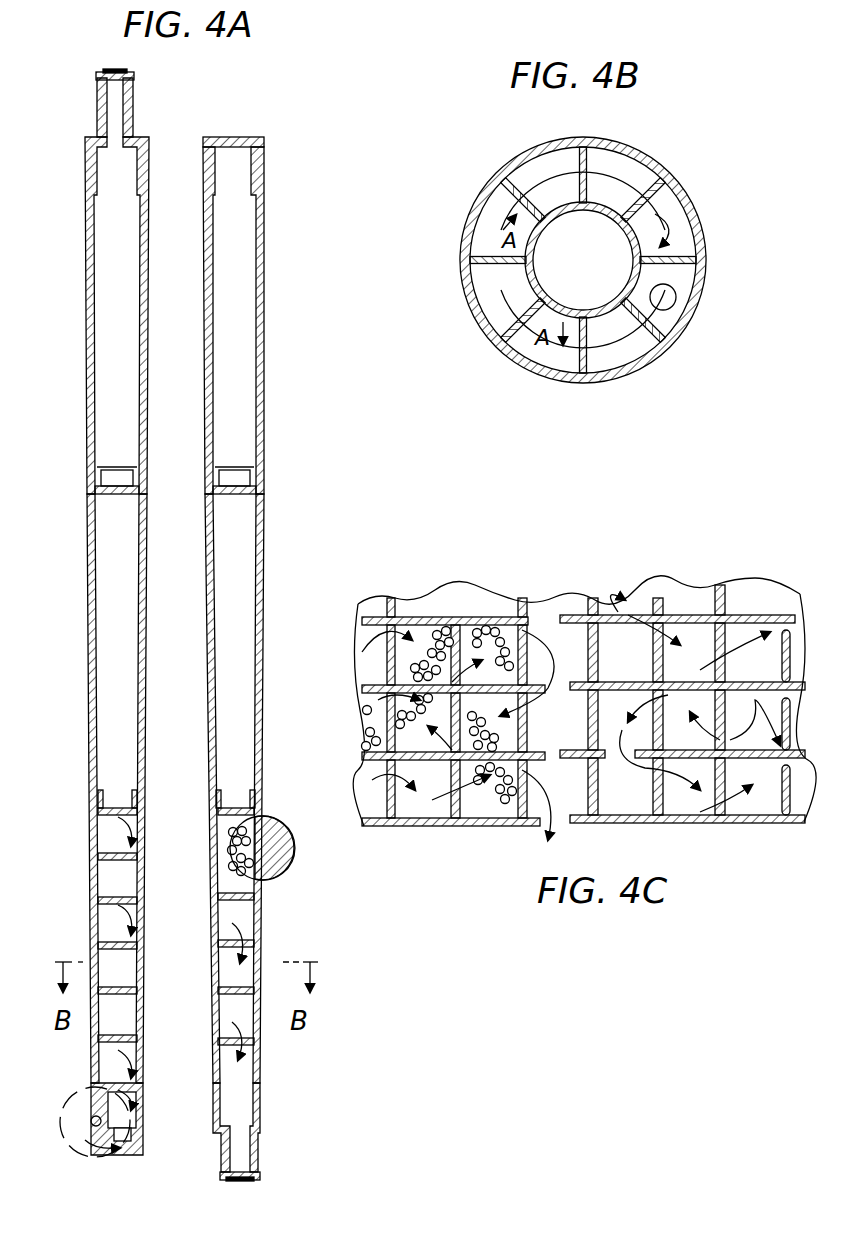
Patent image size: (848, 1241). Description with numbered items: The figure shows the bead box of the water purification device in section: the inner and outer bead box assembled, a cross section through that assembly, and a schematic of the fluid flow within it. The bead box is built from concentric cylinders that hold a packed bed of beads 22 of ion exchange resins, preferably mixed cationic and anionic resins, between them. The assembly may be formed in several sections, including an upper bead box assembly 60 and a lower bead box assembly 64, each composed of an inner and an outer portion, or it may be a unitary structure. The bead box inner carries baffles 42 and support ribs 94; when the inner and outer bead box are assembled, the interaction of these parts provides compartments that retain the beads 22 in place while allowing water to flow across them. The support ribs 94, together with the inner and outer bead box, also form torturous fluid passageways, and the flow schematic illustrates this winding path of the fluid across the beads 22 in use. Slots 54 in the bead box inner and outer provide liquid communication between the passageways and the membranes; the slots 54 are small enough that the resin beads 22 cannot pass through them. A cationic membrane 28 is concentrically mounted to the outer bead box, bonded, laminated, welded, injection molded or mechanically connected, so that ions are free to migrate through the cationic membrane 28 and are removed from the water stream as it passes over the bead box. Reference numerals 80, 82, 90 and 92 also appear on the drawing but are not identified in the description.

In FIG. 4A, the beads 22 is at (242, 812).
In FIG. 4C, the beads 22 is at (372, 720).
In FIG. 4A, the cationic membrane 28 is at (116, 1136).
In FIG. 4B, the baffles 42 is at (662, 177).
In FIG. 4C, the baffles 42 is at (724, 680).
In FIG. 4A, the slots 54 is at (293, 858).
In FIG. 4A, the upper bead box assembly 60 is at (148, 232).
In FIG. 4A, the lower bead box assembly 64 is at (143, 838).
In FIG. 4A, the top seal 80 is at (126, 70).
In FIG. 4A, the bottom seal 82 is at (258, 1178).
In FIG. 4A, the neck 90 is at (134, 115).
In FIG. 4A, the bottom detail 92 is at (112, 1082).
In FIG. 4C, the support ribs 94 is at (441, 830).